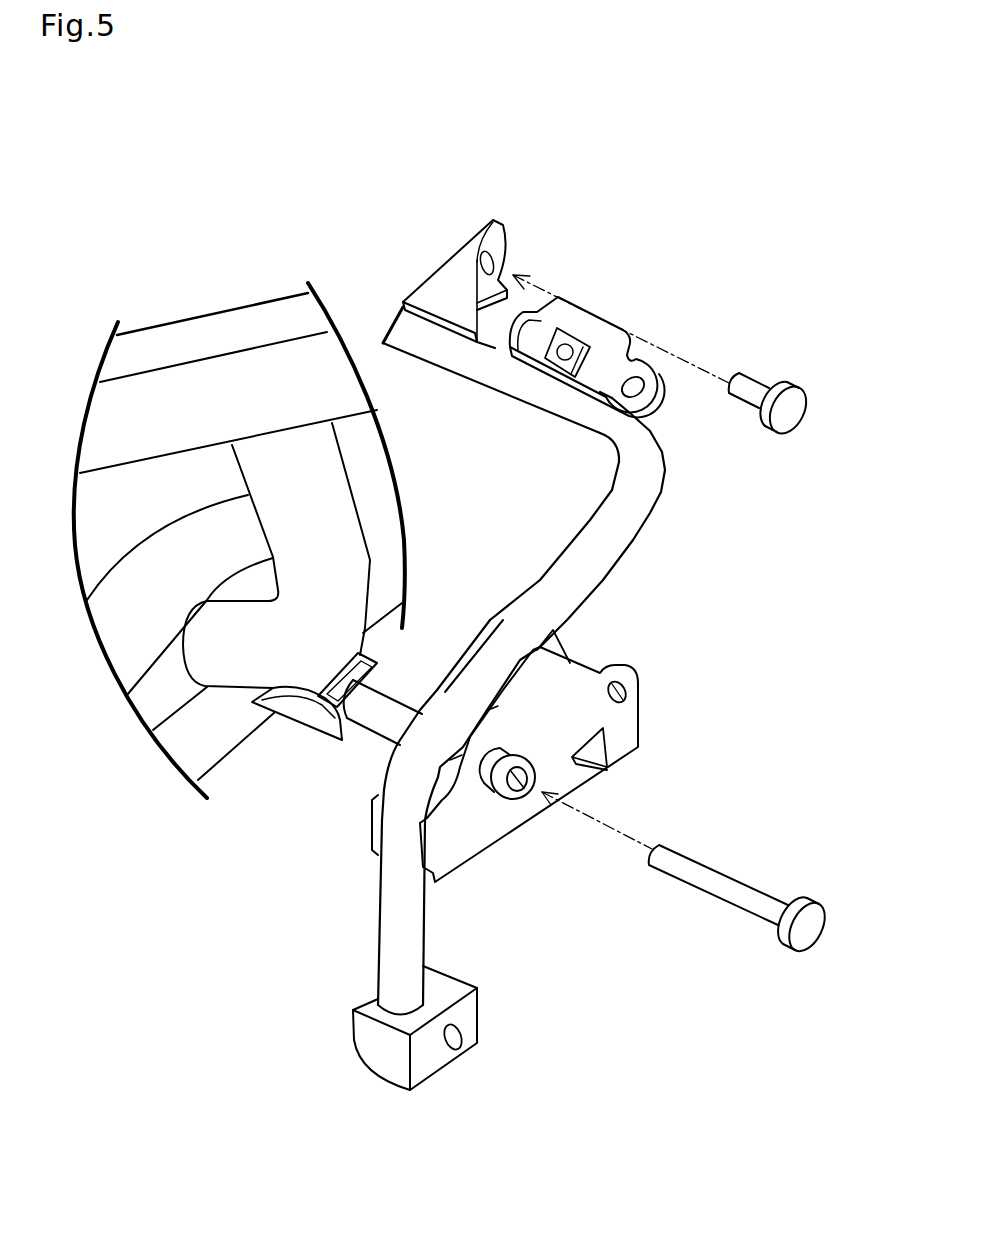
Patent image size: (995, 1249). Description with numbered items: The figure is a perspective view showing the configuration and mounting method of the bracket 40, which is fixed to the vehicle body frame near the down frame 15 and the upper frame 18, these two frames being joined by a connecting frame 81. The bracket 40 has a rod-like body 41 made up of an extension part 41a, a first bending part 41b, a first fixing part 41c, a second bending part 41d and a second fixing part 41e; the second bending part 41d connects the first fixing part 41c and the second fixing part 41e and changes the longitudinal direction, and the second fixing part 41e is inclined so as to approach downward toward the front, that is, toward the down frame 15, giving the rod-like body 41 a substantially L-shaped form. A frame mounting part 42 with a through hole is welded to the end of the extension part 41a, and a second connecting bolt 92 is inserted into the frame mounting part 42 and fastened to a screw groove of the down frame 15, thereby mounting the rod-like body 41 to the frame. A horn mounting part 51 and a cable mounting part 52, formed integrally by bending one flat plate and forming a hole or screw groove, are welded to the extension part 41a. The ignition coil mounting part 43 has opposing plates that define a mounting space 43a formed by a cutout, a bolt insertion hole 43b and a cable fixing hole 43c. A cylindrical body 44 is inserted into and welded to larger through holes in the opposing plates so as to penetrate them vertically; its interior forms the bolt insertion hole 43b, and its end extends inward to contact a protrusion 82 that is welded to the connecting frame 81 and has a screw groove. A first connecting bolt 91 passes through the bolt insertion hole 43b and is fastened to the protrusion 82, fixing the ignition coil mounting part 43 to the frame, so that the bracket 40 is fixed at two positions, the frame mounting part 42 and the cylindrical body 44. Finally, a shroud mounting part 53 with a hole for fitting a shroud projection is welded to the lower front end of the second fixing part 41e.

The down frame 15 is at (217, 757).
The upper frame 18 is at (188, 347).
The bracket 40 is at (688, 220).
The rod-like body 41 is at (535, 666).
The extension part 41a is at (457, 360).
The first bending part 41b is at (660, 475).
The first fixing part 41c is at (593, 527).
The second bending part 41d is at (395, 750).
The second fixing part 41e is at (385, 942).
The frame mounting part 42 is at (452, 275).
The ignition coil mounting part 43 is at (604, 736).
The mounting space 43a is at (567, 771).
The bolt insertion hole 43b is at (530, 800).
The cable fixing hole 43c is at (637, 700).
The cylindrical body 44 is at (388, 732).
The horn mounting part 51 is at (600, 330).
The cable mounting part 52 is at (638, 368).
The shroud mounting part 53 is at (427, 1068).
The connecting frame 81 is at (320, 477).
The protrusion 82 is at (322, 732).
The first connecting bolt 91 is at (768, 900).
The second connecting bolt 92 is at (800, 405).